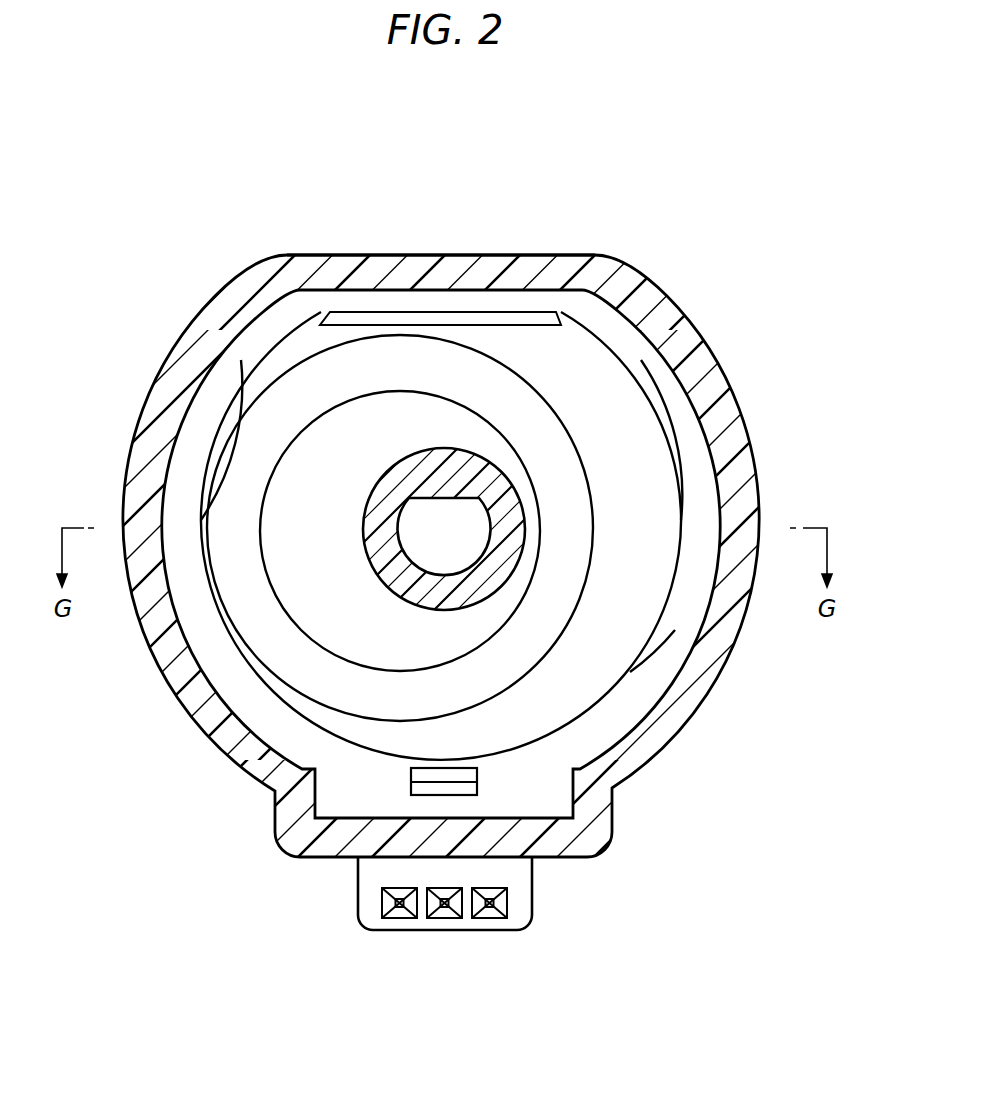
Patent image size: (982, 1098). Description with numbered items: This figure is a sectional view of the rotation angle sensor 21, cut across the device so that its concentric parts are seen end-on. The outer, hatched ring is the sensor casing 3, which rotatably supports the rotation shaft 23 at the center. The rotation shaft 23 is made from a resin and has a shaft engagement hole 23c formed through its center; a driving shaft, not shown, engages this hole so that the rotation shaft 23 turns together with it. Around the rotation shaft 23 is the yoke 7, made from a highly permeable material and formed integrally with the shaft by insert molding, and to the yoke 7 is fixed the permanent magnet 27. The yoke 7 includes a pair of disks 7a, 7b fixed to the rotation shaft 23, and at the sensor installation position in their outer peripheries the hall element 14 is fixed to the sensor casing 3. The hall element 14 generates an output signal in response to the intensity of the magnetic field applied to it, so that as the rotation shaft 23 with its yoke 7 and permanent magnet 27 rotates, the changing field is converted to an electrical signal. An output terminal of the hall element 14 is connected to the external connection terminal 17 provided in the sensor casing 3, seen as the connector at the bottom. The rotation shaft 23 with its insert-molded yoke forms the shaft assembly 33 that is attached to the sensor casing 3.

The sensor casing 3 is at (676, 308).
The rotation angle sensor 21 is at (445, 255).
The yoke 7 is at (702, 697).
The disk 7a is at (650, 424).
The disk 7b is at (221, 440).
The shaft assembly 33 is at (642, 657).
The permanent magnet 27 is at (553, 657).
The rotation shaft 23 is at (413, 455).
The shaft engagement hole 23c is at (432, 553).
The hall element 14 is at (433, 793).
The external connection terminal 17 is at (482, 918).